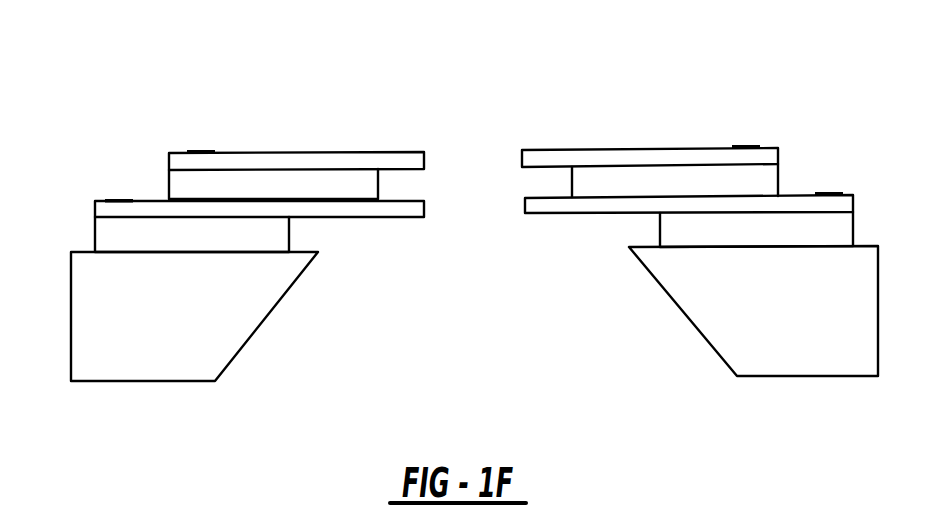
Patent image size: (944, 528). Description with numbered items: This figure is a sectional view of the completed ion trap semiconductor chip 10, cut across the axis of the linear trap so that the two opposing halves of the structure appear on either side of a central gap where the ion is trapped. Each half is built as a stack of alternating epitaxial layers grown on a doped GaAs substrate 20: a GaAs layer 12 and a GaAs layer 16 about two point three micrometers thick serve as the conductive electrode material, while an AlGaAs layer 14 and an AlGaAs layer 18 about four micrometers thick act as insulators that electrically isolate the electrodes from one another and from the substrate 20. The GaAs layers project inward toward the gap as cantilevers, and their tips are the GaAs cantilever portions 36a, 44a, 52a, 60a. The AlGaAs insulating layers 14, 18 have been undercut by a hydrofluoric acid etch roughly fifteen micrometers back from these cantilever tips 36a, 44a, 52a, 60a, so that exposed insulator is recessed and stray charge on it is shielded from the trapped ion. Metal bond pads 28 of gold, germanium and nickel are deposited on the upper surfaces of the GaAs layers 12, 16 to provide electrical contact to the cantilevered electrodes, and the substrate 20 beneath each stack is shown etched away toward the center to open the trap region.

The ion trap semiconductor chip 10 is at (617, 90).
The GaAs layer 12 is at (653, 157).
The AlGaAs layer 14 is at (617, 208).
The GaAs layer 16 is at (323, 208).
The AlGaAs layer 18 is at (110, 235).
The GaAs substrate 20 is at (102, 381).
The bond pad 28 is at (120, 200).
The GaAs cantilever portion 36a is at (525, 210).
The GaAs cantilever portion 44a is at (533, 158).
The GaAs cantilever portion 52a is at (425, 208).
The GaAs cantilever portion 60a is at (418, 159).